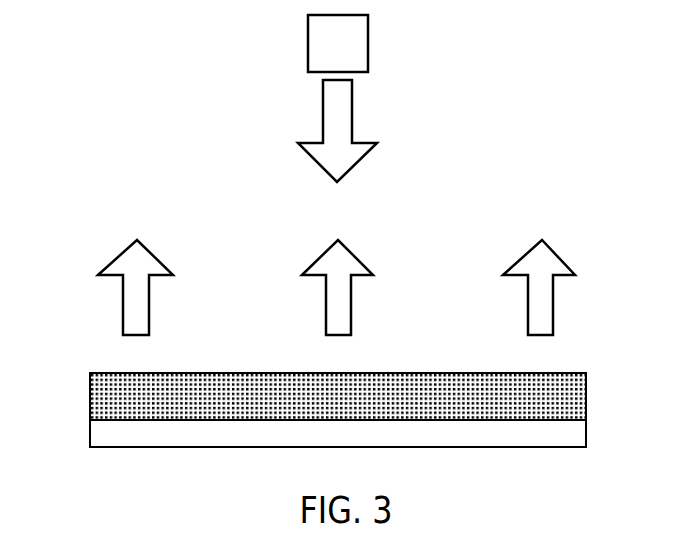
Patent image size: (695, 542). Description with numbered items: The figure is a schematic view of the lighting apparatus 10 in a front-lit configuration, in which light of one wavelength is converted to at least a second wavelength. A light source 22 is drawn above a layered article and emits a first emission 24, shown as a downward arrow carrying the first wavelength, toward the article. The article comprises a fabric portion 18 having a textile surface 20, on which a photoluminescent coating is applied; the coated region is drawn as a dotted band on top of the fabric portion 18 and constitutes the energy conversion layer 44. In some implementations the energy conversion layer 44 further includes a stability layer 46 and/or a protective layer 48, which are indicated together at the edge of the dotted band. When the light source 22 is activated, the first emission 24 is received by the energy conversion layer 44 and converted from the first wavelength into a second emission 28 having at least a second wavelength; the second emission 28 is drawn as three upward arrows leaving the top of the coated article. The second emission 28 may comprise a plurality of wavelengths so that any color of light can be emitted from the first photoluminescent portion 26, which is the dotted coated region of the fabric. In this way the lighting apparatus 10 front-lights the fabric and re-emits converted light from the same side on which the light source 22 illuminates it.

The lighting apparatus 10 is at (526, 86).
The fabric portion 18 is at (338, 404).
The textile surface 20 is at (543, 438).
The light source 22 is at (327, 53).
The first emission 24 is at (347, 107).
The first photoluminescent portion 26 is at (113, 388).
The second emission 28 is at (149, 305).
The energy conversion layer 44 is at (88, 398).
The stability layer 46 is at (338, 384).
The protective layer 48 is at (301, 396).